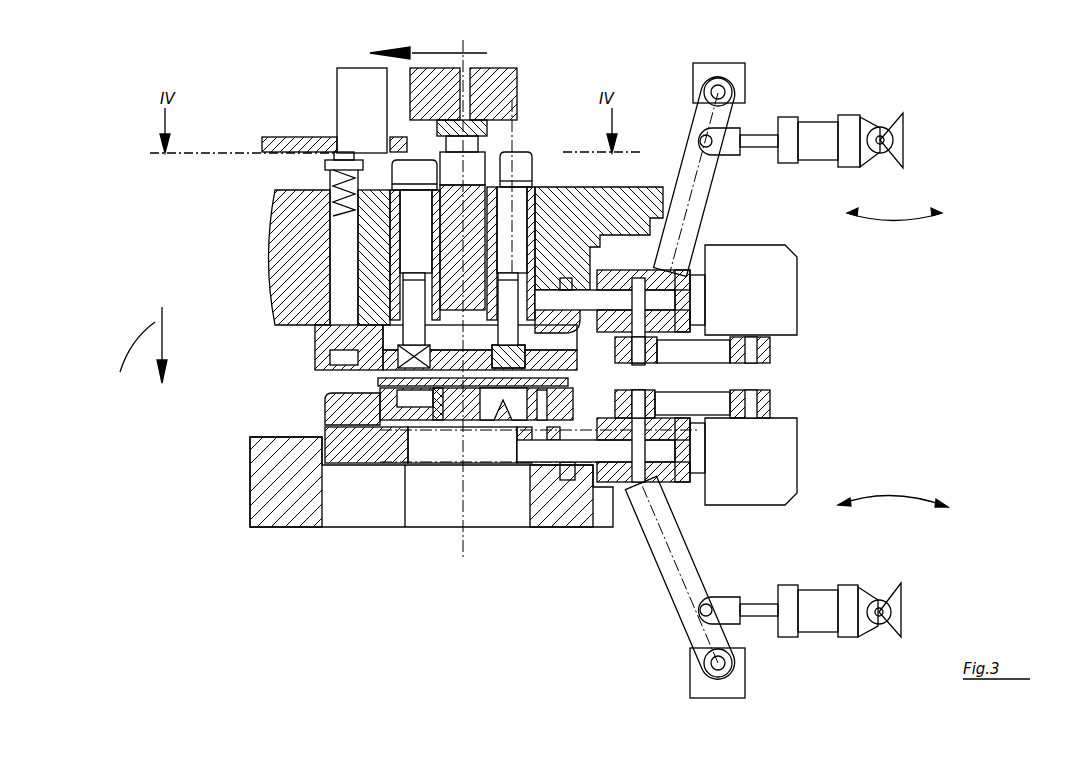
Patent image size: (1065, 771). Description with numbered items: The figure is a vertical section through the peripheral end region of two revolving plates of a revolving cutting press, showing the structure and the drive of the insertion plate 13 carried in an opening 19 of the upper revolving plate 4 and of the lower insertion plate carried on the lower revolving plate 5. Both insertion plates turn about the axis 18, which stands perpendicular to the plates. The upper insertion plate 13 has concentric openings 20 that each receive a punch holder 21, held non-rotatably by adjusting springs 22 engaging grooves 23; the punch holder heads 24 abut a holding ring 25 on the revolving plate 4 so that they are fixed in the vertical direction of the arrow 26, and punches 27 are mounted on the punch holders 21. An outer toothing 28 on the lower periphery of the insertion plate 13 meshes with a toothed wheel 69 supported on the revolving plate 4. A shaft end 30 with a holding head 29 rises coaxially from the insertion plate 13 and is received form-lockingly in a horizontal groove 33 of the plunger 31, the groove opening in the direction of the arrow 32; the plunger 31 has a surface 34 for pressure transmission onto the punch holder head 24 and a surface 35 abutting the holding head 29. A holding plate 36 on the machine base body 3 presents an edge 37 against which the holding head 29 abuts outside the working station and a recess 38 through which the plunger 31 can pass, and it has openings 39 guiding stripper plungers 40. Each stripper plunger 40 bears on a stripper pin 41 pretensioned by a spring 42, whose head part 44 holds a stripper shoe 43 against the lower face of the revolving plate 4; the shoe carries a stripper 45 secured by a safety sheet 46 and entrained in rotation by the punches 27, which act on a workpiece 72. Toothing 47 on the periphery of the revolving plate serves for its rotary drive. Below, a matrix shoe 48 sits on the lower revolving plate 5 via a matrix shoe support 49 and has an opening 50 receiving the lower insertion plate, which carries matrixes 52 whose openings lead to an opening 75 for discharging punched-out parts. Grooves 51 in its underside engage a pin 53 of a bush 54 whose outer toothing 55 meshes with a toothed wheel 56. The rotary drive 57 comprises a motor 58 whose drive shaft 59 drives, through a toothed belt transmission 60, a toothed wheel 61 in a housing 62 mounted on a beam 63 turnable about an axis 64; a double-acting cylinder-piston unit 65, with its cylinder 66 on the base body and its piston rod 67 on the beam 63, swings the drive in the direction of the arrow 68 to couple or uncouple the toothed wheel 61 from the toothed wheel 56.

The machine base body 3 is at (700, 68).
The upper revolving plate 4 is at (295, 255).
The lower revolving plate 5 is at (325, 507).
The insertion plate 13 is at (283, 222).
The axis 18 is at (455, 470).
The opening 19 is at (300, 235).
The openings 20 is at (313, 233).
The punch holder 21 is at (300, 300).
The adjusting springs 22 is at (276, 324).
The grooves 23 is at (317, 332).
The punch holder heads 24 is at (330, 165).
The holding ring 25 is at (330, 180).
The arrow 26 is at (135, 348).
The punches 27 is at (572, 382).
The outer toothing 28 is at (610, 220).
The holding head 29 is at (500, 85).
The shaft end 30 is at (468, 128).
The plunger 31 is at (500, 100).
The arrow 32 is at (422, 55).
The groove 33 is at (505, 140).
The surface 34 is at (507, 152).
The surface 35 is at (500, 118).
The holding plate 36 is at (400, 143).
The edge 37 is at (482, 128).
The recess 38 is at (383, 128).
The openings 39 is at (337, 140).
The stripper plunger 40 is at (358, 78).
The stripper pin 41 is at (347, 262).
The spring 42 is at (320, 213).
The stripper shoe 43 is at (317, 348).
The head part 44 is at (330, 363).
The stripper 45 is at (380, 380).
The safety sheet 46 is at (540, 375).
The toothing 47 is at (657, 200).
The matrix shoe 48 is at (275, 440).
The matrix shoe support 49 is at (290, 528).
The opening 50 is at (556, 485).
The grooves 51 is at (324, 507).
The matrix 52 is at (503, 470).
The pin 53 is at (527, 480).
The bush 54 is at (393, 480).
The outer toothing 55 is at (367, 480).
The toothed wheel 56 is at (577, 470).
The rotary drive 57 is at (838, 453).
The motor 58 is at (757, 465).
The drive shaft 59 is at (770, 398).
The toothed belt transmission 60 is at (700, 414).
The toothed wheel 61 is at (700, 490).
The housing 62 is at (634, 500).
The beam 63 is at (690, 550).
The axis 64 is at (724, 663).
The cylinder-piston unit 65 is at (786, 622).
The cylinder 66 is at (825, 598).
The piston rod 67 is at (757, 606).
The arrow 68 is at (888, 496).
The toothed wheel 69 is at (568, 296).
The workpiece 72 is at (373, 405).
The opening 75 is at (507, 500).